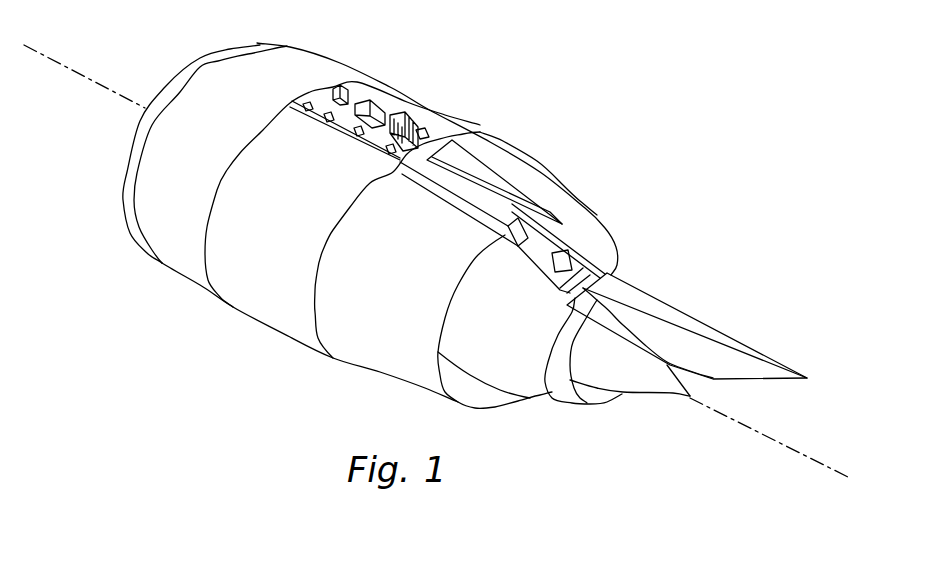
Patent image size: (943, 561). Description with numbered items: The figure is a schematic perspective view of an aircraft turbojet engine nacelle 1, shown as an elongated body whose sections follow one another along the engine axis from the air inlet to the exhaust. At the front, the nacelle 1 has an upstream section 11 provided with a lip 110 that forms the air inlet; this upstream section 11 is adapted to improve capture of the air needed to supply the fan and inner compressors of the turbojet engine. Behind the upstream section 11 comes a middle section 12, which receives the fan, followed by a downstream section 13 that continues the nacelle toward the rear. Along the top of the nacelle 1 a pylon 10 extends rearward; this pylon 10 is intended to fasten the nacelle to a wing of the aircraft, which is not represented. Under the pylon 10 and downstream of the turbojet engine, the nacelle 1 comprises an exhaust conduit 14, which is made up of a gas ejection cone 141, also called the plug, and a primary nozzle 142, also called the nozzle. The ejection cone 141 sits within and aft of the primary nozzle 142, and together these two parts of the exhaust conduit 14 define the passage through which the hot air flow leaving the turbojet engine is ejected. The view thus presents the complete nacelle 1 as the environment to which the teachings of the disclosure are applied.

The nacelle 1 is at (473, 78).
The pylon 10 is at (697, 326).
The upstream section 11 is at (182, 250).
The lip 110 is at (203, 63).
The middle section 12 is at (282, 308).
The downstream section 13 is at (388, 360).
The exhaust conduit 14 is at (597, 397).
The gas ejection cone 141 is at (643, 383).
The primary nozzle 142 is at (567, 397).